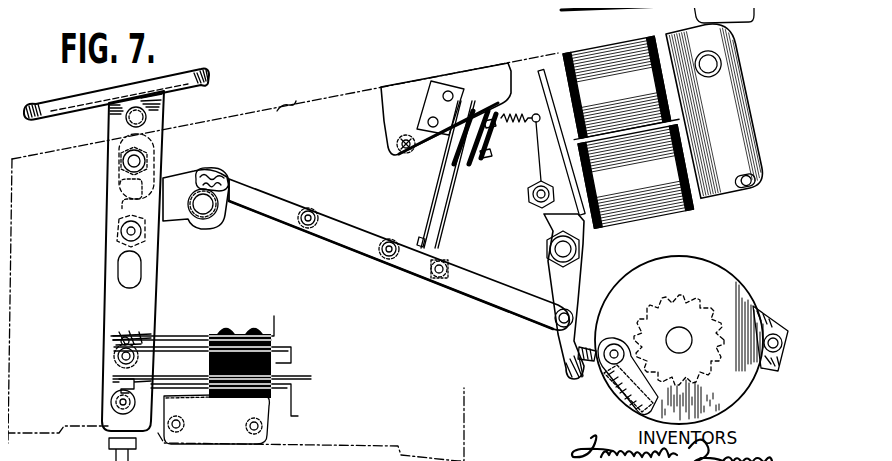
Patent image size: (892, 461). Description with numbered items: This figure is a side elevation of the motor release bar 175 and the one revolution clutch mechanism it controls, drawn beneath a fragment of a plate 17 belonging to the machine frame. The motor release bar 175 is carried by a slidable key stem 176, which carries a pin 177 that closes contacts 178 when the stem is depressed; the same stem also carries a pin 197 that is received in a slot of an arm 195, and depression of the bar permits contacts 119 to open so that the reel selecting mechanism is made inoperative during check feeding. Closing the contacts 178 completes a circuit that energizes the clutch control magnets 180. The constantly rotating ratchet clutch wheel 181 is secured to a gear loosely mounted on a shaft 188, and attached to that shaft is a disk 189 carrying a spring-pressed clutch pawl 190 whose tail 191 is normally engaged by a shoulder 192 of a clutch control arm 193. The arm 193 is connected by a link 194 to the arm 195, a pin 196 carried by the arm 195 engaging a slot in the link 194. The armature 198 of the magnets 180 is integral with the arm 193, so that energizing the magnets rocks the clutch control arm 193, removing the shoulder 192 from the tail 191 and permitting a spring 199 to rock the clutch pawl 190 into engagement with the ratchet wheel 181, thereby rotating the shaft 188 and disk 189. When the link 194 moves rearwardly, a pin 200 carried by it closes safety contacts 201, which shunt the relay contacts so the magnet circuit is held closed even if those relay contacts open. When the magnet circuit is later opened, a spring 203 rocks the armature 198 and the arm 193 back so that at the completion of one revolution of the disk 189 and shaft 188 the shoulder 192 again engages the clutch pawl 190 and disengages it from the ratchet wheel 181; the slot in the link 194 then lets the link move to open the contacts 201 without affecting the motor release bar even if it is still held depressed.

The plate 17 is at (415, 8).
The motor release bar 175 is at (207, 73).
The key stem 176 is at (145, 292).
The pin 197 is at (124, 195).
The arm 195 is at (180, 175).
The pin 196 is at (220, 174).
The contacts 119 is at (143, 333).
The pin 177 is at (133, 356).
The contacts 178 is at (118, 379).
The link 194 is at (505, 292).
The pin 200 is at (447, 266).
The safety contacts 201 is at (432, 226).
The spring 203 is at (512, 124).
The armature 198 is at (543, 162).
The clutch control arm 193 is at (563, 339).
The shoulder 192 is at (579, 377).
The tail 191 is at (579, 348).
The clutch pawl 190 is at (641, 412).
The spring 199 is at (616, 393).
The disk 189 is at (698, 258).
The ratchet clutch wheel 181 is at (703, 300).
The shaft 188 is at (686, 337).
The clutch control magnets 180 is at (625, 157).